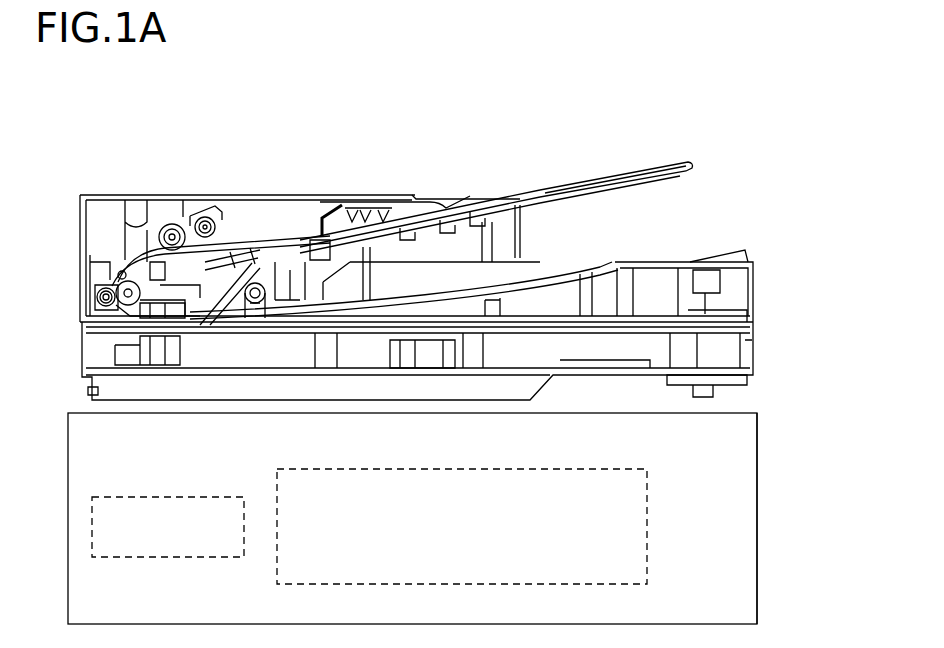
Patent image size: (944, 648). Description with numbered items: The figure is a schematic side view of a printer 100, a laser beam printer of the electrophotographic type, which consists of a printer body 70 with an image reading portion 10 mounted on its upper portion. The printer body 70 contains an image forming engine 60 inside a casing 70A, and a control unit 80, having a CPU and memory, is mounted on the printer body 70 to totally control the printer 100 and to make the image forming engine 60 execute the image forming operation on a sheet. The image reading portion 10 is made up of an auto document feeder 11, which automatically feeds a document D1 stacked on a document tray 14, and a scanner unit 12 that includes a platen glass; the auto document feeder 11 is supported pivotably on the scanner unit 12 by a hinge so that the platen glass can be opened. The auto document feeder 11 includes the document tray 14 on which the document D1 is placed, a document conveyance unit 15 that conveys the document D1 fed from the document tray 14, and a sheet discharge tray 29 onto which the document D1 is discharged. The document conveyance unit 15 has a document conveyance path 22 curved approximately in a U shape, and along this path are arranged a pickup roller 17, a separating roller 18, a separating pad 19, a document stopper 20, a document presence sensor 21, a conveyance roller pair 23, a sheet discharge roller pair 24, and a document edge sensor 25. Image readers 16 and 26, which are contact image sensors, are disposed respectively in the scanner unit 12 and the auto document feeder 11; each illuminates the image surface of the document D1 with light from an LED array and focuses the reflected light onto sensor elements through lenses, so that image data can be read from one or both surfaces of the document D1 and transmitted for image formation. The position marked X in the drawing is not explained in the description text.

The printer 100 is at (385, 140).
The image reading portion 10 is at (849, 272).
The auto document feeder (ADF) 11 is at (756, 288).
The scanner unit 12 is at (756, 348).
The document tray 14 is at (467, 207).
The document conveyance unit 15 is at (118, 223).
The image reader 16 is at (157, 337).
The pickup roller 17 is at (213, 213).
The separating roller 18 is at (153, 227).
The separating pad 19 is at (192, 202).
The document stopper 20 is at (227, 227).
The document presence sensor 21 is at (250, 230).
The document conveyance path 22 is at (118, 273).
The conveyance roller pair 23 is at (100, 290).
The sheet discharge roller pair 24 is at (257, 323).
The document edge sensor 25 is at (110, 310).
The image reader 26 is at (185, 322).
The sheet discharge tray 29 is at (548, 263).
The image forming engine 60 is at (648, 522).
The printer body 70 is at (758, 472).
The casing 70A is at (758, 583).
The control unit 80 is at (167, 558).
The document D1 is at (572, 187).
The reading position X is at (207, 323).